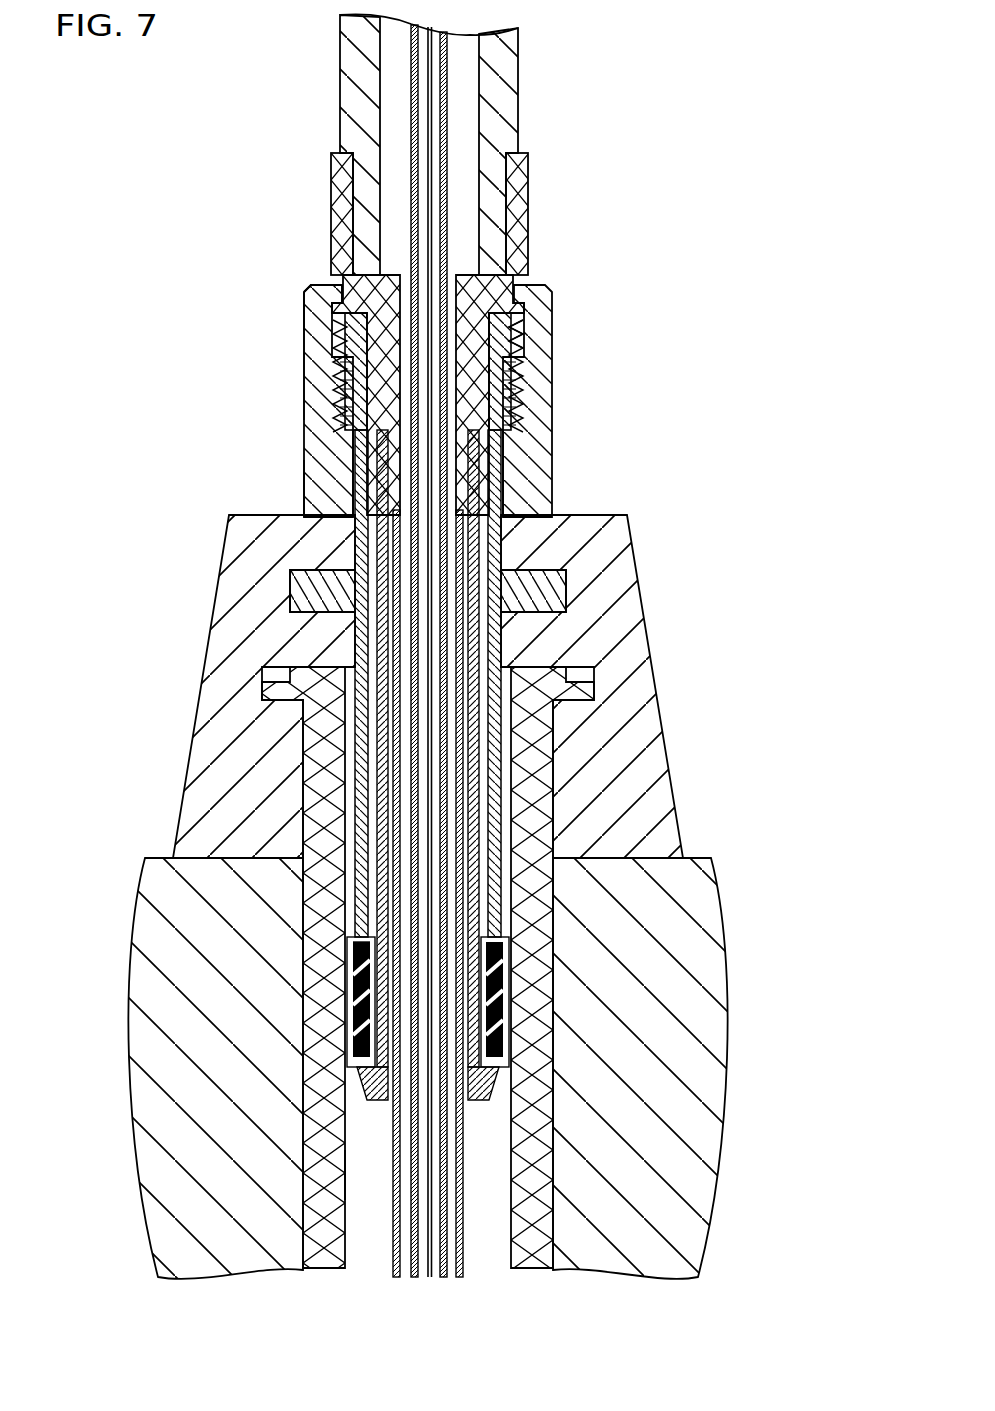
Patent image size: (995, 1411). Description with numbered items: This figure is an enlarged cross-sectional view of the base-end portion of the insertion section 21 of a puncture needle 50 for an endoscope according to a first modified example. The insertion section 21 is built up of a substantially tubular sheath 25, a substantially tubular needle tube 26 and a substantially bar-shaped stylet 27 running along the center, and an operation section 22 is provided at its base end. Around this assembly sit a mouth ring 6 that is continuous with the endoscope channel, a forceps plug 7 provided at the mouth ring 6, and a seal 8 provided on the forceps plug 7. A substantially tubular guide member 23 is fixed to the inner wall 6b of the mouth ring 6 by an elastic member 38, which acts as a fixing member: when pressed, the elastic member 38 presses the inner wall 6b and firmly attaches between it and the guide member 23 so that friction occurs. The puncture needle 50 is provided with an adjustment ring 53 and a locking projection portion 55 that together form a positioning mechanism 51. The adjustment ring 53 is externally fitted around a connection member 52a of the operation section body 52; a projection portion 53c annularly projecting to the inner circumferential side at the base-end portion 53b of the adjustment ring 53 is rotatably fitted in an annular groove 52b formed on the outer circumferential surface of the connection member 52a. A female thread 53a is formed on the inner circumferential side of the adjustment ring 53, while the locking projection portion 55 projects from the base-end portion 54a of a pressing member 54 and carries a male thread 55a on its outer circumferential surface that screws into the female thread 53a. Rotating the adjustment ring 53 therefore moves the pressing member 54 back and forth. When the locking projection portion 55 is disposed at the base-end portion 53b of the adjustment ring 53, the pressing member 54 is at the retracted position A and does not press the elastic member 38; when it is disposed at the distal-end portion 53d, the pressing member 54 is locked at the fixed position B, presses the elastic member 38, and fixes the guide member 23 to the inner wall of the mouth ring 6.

The forceps plug 7 is at (628, 636).
The insertion section 21 is at (460, 1225).
The seal 8 is at (565, 598).
The mouth ring 6 is at (540, 737).
The inner wall 6b is at (362, 1185).
The guide member 23 is at (480, 820).
The sheath 25 is at (463, 1172).
The needle tube 26 is at (447, 125).
The stylet 27 is at (430, 156).
The operation section body 52 is at (518, 87).
The operation section 22 is at (518, 58).
The connection member 52a is at (521, 201).
The annular groove 52b is at (551, 299).
The pressing member 54 is at (515, 396).
The base-end portion 54a is at (500, 332).
The adjustment ring 53 is at (305, 433).
The female thread 53a is at (530, 445).
The base-end portion 53b is at (305, 305).
The projection portion 53c is at (317, 294).
The distal-end portion 53d is at (305, 481).
The locking projection portion 55 is at (318, 338).
The male thread 55a is at (528, 337).
The positioning mechanism 51 is at (160, 360).
The elastic member 38 is at (500, 975).
The puncture needle 50 is at (726, 99).
The retracted position A is at (355, 958).
The fixed position B is at (355, 1050).